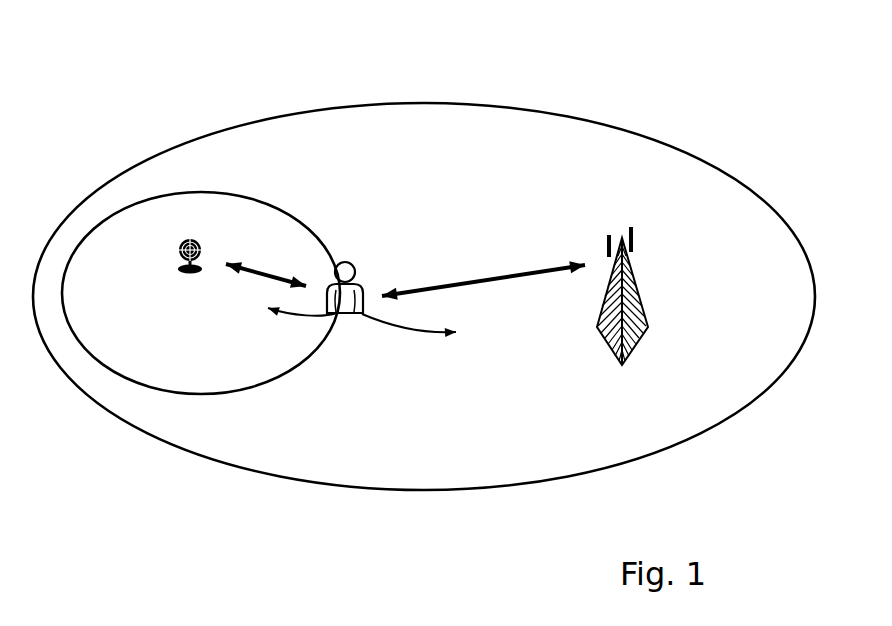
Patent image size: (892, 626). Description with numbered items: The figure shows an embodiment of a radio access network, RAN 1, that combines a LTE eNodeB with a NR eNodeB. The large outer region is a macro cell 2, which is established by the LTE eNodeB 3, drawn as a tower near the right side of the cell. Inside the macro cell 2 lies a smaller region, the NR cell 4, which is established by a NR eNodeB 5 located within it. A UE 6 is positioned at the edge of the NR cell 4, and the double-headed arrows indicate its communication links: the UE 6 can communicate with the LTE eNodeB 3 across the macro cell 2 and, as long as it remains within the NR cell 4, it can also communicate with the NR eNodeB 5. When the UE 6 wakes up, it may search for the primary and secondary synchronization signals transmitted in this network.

The RAN 1 is at (540, 66).
The macro cell 2 is at (412, 103).
The LTE eNodeB 3 is at (635, 280).
The NR cell 4 is at (277, 202).
The NR eNodeB 5 is at (204, 245).
The UE 6 is at (352, 259).